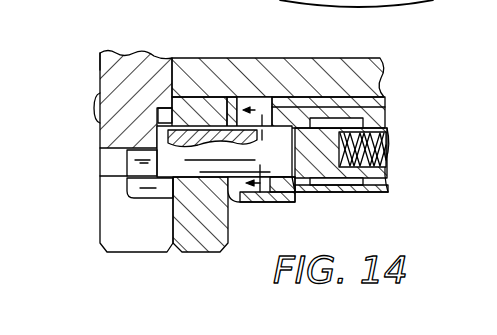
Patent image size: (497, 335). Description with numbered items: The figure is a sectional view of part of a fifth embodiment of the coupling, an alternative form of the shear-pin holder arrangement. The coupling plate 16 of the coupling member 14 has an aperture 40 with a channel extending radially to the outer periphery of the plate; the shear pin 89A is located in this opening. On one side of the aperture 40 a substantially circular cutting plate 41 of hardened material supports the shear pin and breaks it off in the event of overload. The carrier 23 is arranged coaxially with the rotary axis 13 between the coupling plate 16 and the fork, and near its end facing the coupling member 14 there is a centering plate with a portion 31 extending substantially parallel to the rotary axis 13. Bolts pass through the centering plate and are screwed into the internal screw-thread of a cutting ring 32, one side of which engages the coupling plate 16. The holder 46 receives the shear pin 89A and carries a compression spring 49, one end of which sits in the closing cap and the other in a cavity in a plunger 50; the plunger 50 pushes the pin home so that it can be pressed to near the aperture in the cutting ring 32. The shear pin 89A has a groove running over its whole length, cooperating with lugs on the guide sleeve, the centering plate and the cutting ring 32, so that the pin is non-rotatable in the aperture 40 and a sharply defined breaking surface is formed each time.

The coupling member 14 is at (98, 63).
The coupling plate 16 is at (128, 58).
The carrier 23 is at (322, 43).
The rotary axis 13 is at (97, 107).
The cutting plate 41 is at (133, 165).
The aperture 40 is at (110, 207).
The cutting ring 32 is at (207, 245).
The portion of centering plate 31 is at (270, 205).
The holder 46 is at (386, 122).
The compression spring 49 is at (387, 150).
The plunger 50 is at (387, 173).
The shear pin 89A is at (296, 180).